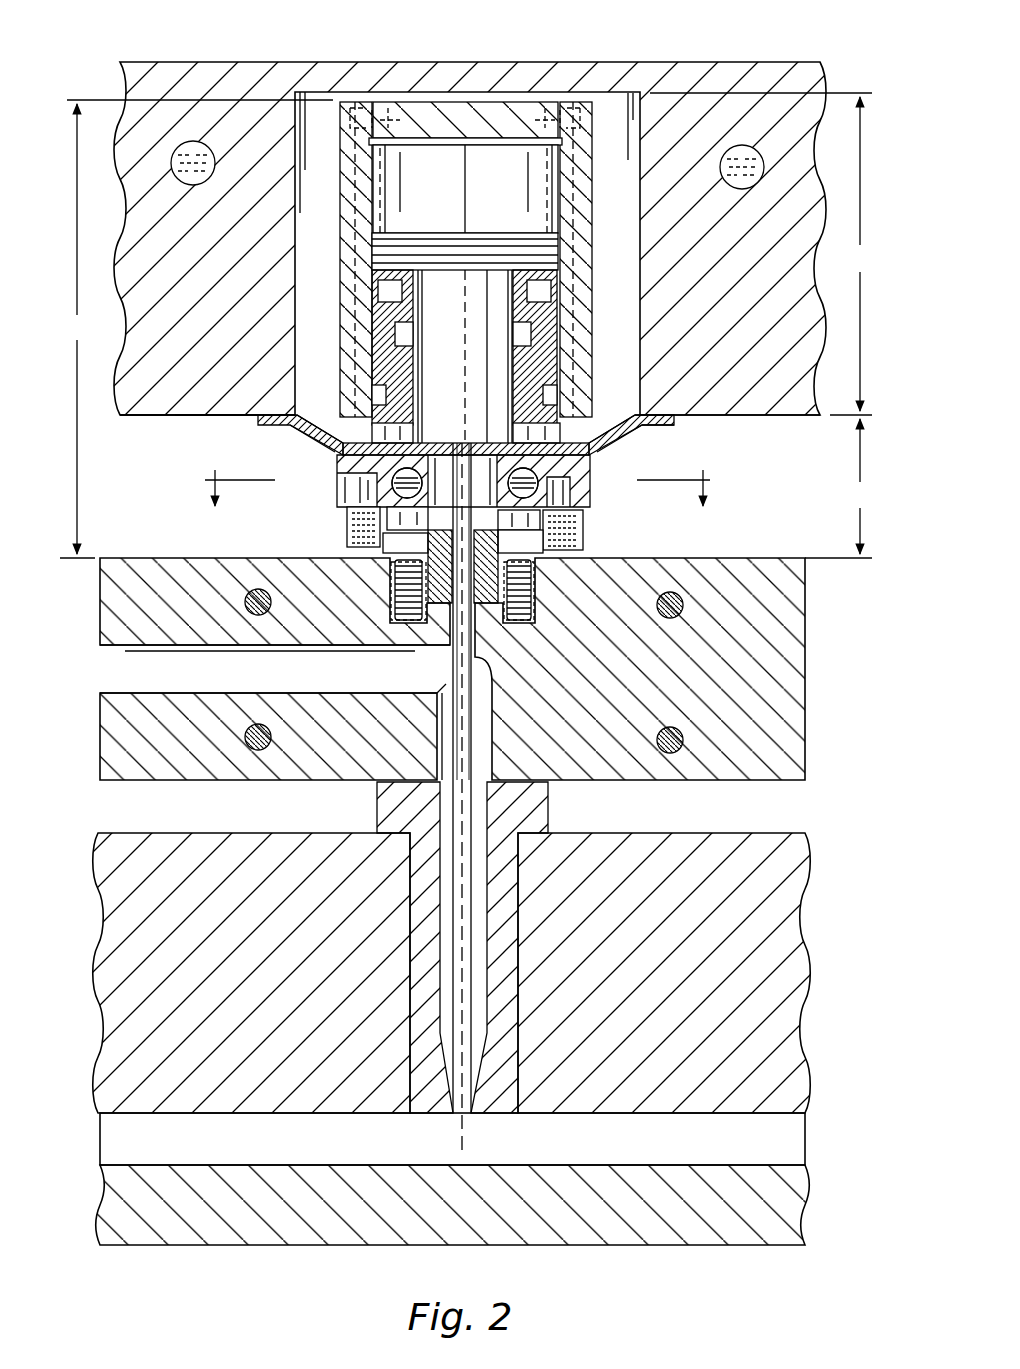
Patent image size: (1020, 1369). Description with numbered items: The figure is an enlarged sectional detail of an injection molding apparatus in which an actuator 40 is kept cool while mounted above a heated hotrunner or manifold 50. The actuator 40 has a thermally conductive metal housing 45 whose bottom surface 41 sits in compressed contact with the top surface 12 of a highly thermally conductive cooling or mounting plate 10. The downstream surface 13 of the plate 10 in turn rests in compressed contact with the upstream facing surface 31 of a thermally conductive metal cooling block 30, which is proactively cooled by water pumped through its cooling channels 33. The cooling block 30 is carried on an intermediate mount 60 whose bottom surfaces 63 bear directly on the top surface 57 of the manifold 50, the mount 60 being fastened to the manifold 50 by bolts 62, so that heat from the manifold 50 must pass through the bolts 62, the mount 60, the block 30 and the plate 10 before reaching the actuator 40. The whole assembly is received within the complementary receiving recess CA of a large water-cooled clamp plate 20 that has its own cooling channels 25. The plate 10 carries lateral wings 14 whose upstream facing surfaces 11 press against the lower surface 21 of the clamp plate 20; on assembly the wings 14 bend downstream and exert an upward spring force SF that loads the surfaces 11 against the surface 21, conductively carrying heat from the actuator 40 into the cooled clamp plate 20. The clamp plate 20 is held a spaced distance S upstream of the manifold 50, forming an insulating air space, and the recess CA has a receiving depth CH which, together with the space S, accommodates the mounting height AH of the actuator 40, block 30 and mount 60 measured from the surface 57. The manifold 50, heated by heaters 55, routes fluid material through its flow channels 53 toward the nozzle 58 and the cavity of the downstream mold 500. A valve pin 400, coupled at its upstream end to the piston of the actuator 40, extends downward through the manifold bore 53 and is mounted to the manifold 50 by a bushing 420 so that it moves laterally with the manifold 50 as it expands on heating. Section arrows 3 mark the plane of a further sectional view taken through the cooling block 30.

The clamp plate 20 is at (756, 55).
The cooling channels 25 is at (172, 163).
The actuator 40 is at (526, 88).
The housing 45 is at (341, 256).
The upstream facing surface 31 is at (560, 408).
The bottom surface 41 is at (593, 448).
The cooling plate 10 is at (292, 436).
The wings 14 is at (305, 447).
The top surface 12 is at (630, 424).
The upstream facing surfaces 11 is at (272, 410).
The lower surface 21 is at (208, 418).
The cooling block 30 is at (333, 471).
The downstream surface 13 is at (548, 482).
The cooling channels 33 is at (380, 482).
The bottom surfaces 63 is at (380, 573).
The mount 60 is at (591, 525).
The bolts 62 is at (492, 622).
The manifold 50 is at (818, 618).
The top surface 57 is at (786, 558).
The flow channels 53 is at (114, 664).
The heaters 55 is at (258, 724).
The valve pin 400 is at (440, 803).
The bushing 420 is at (492, 612).
The nozzle 58 is at (517, 887).
The mold 500 is at (724, 1236).
The section line 3- 3 is at (457, 512).
The mounting height AH is at (196, 329).
The receiving depth CH is at (762, 254).
The spaced distance S is at (838, 488).
The receiving recess CA is at (613, 105).
The spring force SF is at (272, 402).